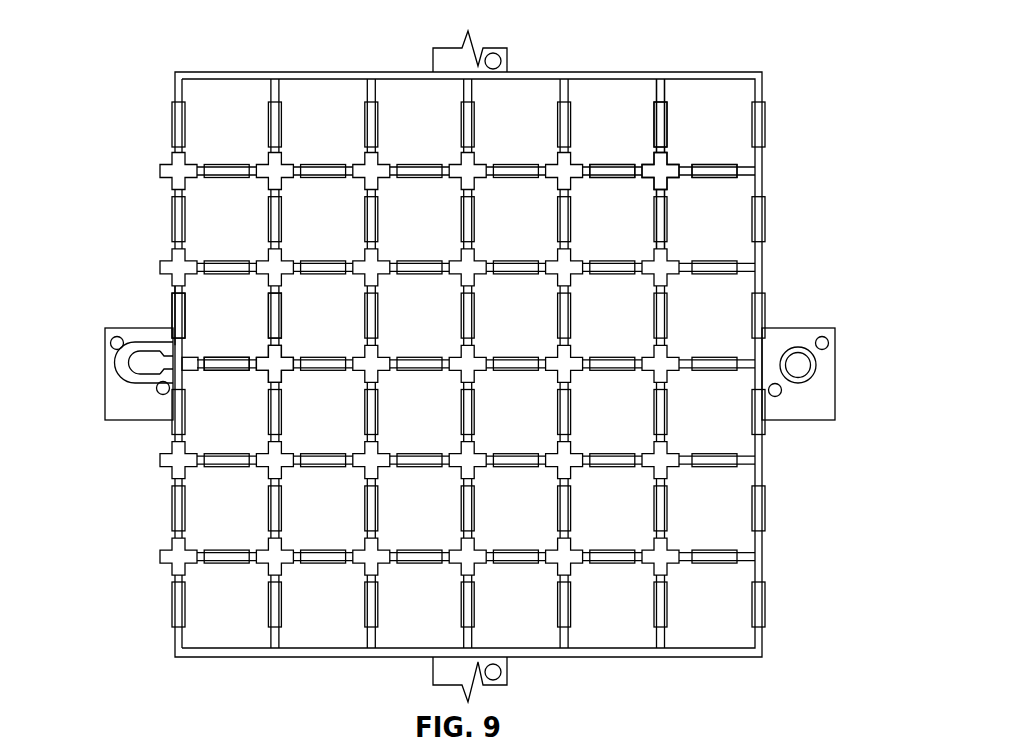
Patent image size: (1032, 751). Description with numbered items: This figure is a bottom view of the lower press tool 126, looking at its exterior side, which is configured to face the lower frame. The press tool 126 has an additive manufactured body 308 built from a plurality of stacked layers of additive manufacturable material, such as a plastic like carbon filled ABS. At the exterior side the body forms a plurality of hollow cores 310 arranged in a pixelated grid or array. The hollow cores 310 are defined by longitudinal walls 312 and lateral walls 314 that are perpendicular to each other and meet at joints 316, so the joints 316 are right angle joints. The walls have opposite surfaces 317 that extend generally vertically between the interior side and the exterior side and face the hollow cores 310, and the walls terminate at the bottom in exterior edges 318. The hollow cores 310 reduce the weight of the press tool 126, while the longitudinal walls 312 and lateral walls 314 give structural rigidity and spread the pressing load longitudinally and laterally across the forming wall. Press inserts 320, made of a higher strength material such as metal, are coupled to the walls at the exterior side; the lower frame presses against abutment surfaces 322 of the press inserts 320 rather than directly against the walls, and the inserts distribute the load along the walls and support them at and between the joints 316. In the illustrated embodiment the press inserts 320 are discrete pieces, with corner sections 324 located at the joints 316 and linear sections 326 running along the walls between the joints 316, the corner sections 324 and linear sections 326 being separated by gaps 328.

The lower press tool 126 is at (450, 351).
The additive manufactured body 308 is at (763, 92).
The hollow cores 310 is at (450, 361).
The longitudinal walls 312 is at (668, 193).
The lateral walls 314 is at (747, 166).
The joints 316 is at (668, 163).
The surfaces 317 is at (640, 166).
The exterior edges 318 is at (665, 152).
The press inserts 320 is at (272, 320).
The abutment surfaces 322 is at (178, 325).
The corner sections 324 is at (165, 368).
The linear sections 326 is at (173, 300).
The gaps 328 is at (170, 344).